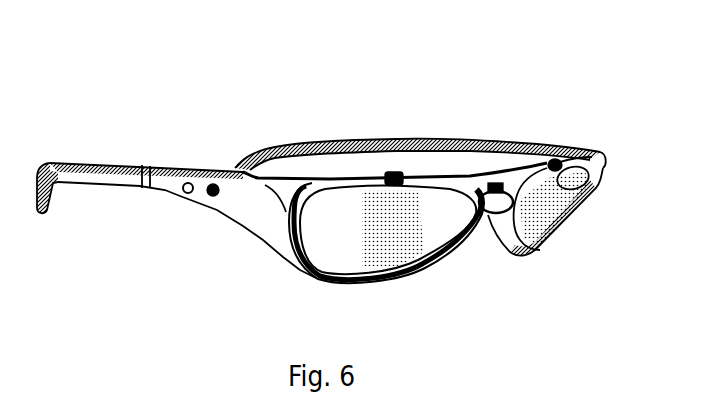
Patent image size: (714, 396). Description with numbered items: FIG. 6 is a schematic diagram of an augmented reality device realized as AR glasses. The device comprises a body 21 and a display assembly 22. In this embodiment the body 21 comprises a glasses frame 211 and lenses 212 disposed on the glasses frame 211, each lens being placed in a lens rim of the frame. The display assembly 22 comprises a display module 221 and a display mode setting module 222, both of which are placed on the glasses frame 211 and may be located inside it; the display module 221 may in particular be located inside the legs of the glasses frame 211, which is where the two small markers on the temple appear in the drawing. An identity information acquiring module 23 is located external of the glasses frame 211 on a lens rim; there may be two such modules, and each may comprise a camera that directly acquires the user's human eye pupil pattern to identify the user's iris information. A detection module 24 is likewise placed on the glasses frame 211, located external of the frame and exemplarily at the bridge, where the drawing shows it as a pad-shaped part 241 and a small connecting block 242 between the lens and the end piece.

The body 21 is at (349, 153).
The glasses frame 211 is at (265, 227).
The lenses 212 is at (338, 228).
The display assembly 22 is at (174, 109).
The display module 221 is at (186, 183).
The display mode setting module 222 is at (212, 184).
The identity information acquiring module 23 is at (395, 176).
The detection module 24 is at (490, 118).
The nose pad 241 is at (500, 187).
The nose pad connector 242 is at (488, 205).